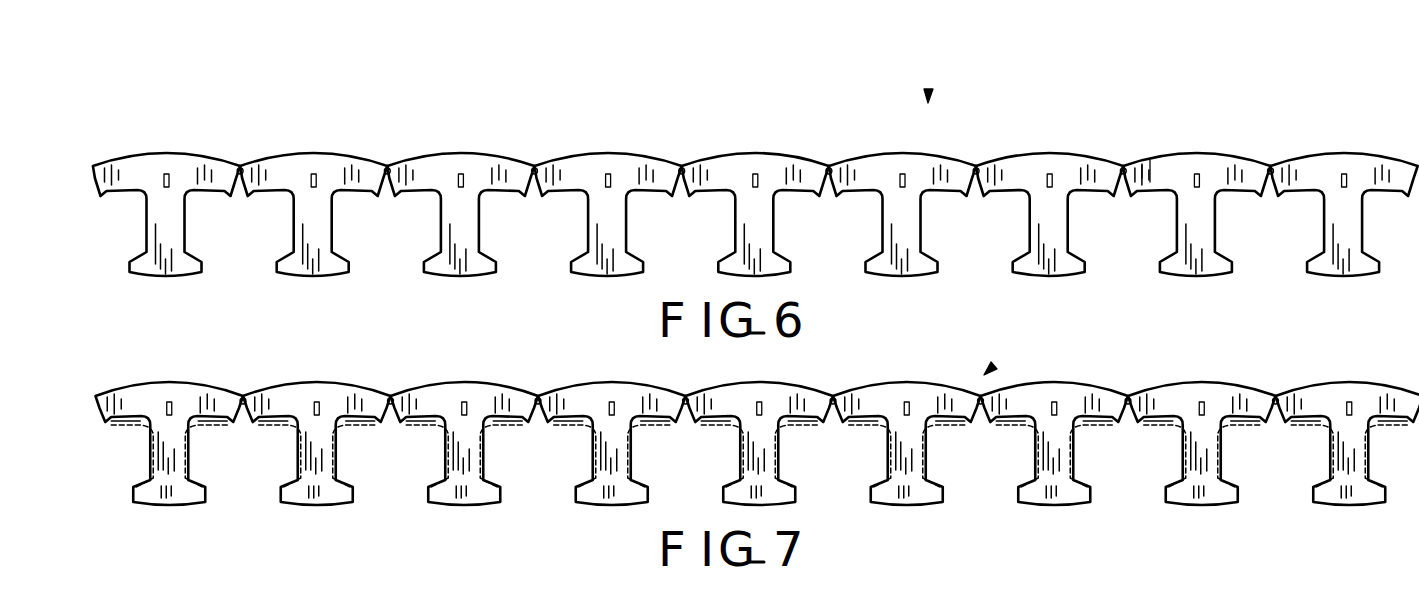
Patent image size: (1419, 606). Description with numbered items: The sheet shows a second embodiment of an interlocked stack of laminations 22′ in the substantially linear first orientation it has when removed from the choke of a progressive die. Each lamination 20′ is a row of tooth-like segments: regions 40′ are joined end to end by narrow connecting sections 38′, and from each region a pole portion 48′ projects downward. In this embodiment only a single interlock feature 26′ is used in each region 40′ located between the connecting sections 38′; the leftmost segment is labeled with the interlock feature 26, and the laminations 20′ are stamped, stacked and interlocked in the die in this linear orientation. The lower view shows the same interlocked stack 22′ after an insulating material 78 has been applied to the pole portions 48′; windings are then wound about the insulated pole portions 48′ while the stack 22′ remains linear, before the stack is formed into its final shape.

In FIG. 6, the lamination 20′ is at (1152, 162).
In FIG. 6, the interlocked stack of laminations 22′ is at (928, 100).
In FIG. 7, the interlocked stack of laminations 22′ is at (986, 372).
In FIG. 6, the aperture 26 is at (165, 174).
In FIG. 6, the interlock feature 26′ is at (311, 173).
In FIG. 7, the interlock feature 26′ is at (462, 405).
In FIG. 6, the connecting section 38′ is at (240, 165).
In FIG. 7, the connecting section 38′ is at (537, 398).
In FIG. 6, the region 40′ is at (344, 168).
In FIG. 7, the region 40′ is at (495, 388).
In FIG. 6, the pole portion 48′ is at (162, 257).
In FIG. 7, the insulating material 78 is at (150, 453).